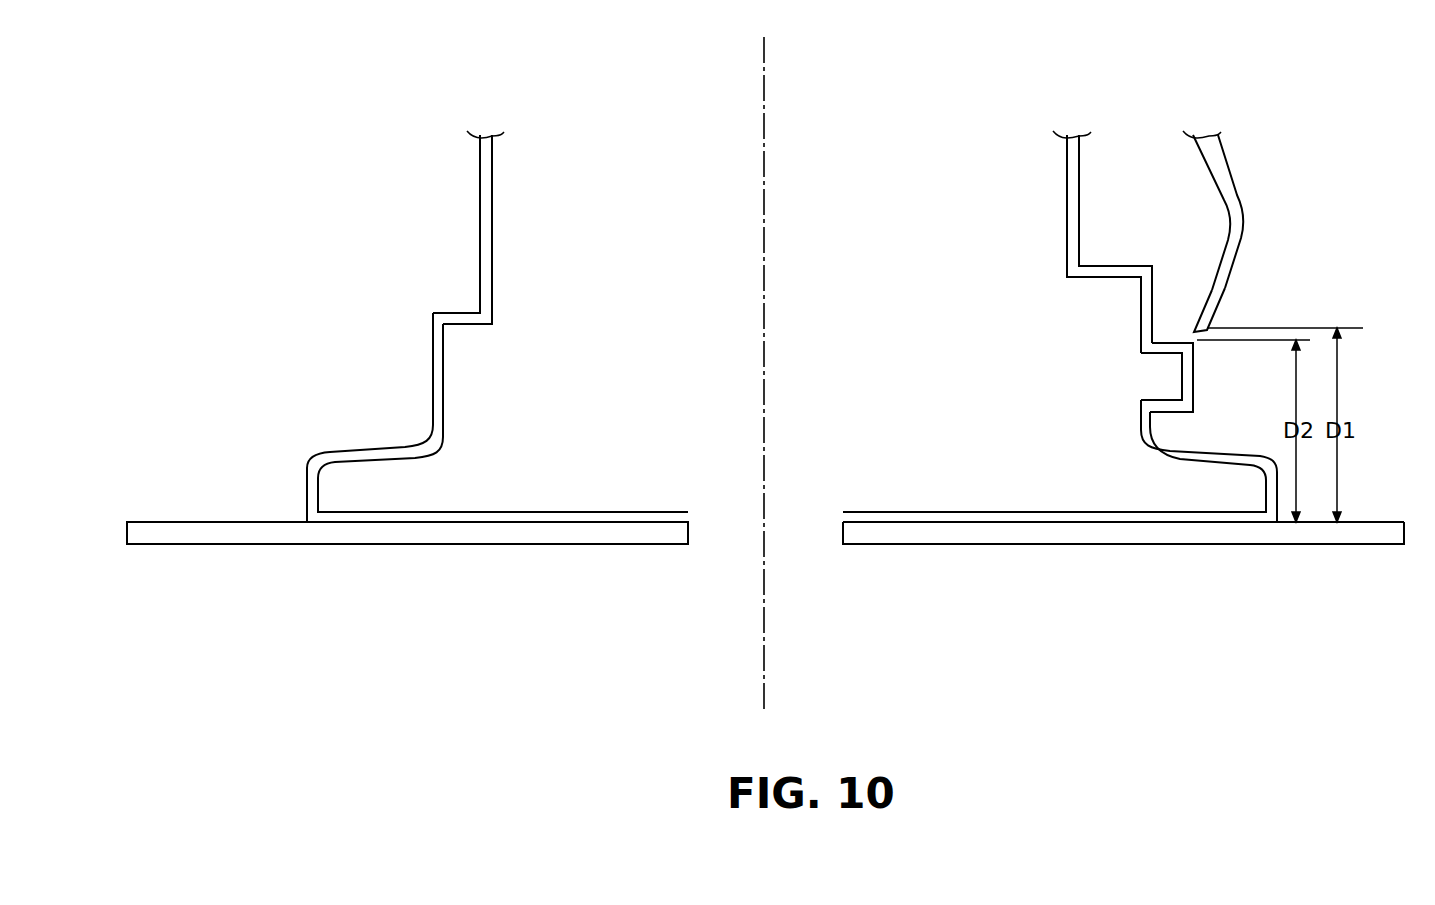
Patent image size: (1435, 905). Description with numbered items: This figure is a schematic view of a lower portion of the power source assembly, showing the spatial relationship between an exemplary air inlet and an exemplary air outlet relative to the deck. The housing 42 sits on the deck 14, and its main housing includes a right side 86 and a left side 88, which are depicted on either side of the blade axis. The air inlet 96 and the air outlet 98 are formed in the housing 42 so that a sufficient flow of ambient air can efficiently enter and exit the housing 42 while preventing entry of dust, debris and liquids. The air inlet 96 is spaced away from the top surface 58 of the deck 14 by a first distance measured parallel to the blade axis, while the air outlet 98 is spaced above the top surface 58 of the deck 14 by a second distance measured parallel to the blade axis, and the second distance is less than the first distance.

The housing 42 is at (497, 326).
The left side 88 is at (433, 351).
The right side 86 is at (1262, 231).
The air inlet 96 is at (1182, 292).
The air outlet 98 is at (1158, 370).
The top surface 58 is at (1377, 522).
The deck 14 is at (771, 537).